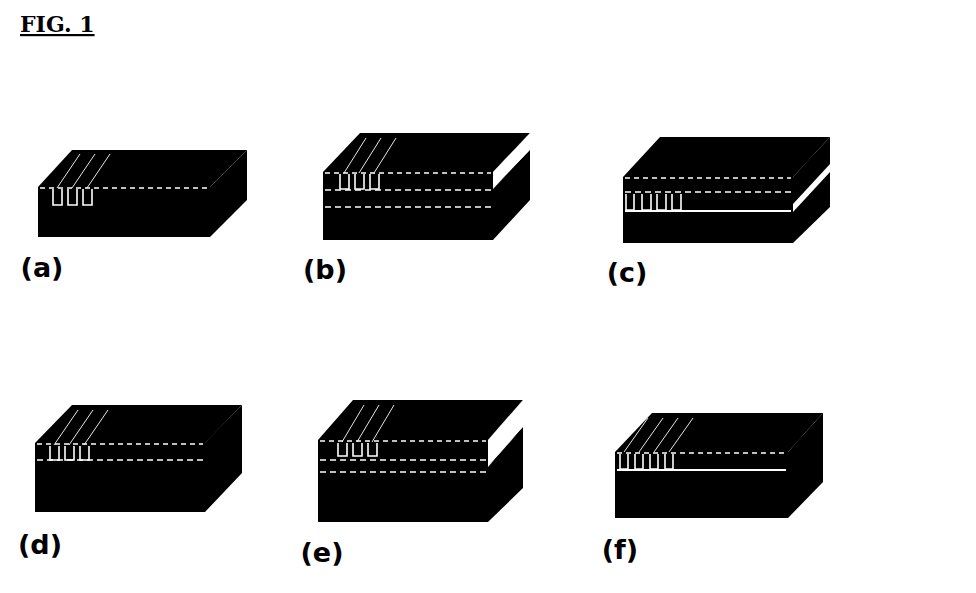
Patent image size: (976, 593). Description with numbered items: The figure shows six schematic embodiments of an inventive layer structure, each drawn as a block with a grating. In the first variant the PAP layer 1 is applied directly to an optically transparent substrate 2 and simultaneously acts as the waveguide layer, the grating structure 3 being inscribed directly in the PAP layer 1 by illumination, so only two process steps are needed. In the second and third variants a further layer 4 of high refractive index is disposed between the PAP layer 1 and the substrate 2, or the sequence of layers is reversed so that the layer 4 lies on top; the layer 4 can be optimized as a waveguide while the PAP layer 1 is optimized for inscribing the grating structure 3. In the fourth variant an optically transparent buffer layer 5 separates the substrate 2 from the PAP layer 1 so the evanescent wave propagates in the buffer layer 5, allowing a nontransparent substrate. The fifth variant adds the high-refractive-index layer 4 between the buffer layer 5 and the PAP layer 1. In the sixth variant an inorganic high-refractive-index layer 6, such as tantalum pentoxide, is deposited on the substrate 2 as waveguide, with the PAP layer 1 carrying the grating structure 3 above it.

The PAP layer 1 is at (720, 433).
The substrate 2 is at (753, 547).
The grating structure 3 is at (668, 430).
The high-refractive-index layer 4 is at (450, 465).
The buffer layer 5 is at (500, 523).
The inorganic high-refractive-index layer 6 is at (752, 480).